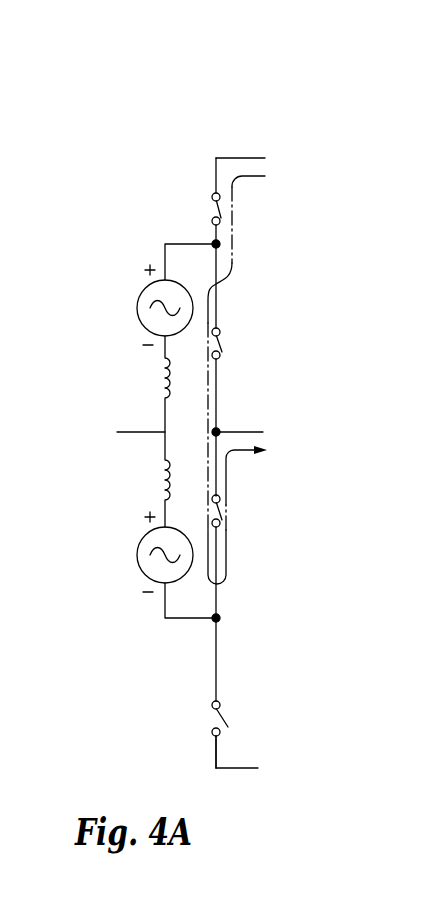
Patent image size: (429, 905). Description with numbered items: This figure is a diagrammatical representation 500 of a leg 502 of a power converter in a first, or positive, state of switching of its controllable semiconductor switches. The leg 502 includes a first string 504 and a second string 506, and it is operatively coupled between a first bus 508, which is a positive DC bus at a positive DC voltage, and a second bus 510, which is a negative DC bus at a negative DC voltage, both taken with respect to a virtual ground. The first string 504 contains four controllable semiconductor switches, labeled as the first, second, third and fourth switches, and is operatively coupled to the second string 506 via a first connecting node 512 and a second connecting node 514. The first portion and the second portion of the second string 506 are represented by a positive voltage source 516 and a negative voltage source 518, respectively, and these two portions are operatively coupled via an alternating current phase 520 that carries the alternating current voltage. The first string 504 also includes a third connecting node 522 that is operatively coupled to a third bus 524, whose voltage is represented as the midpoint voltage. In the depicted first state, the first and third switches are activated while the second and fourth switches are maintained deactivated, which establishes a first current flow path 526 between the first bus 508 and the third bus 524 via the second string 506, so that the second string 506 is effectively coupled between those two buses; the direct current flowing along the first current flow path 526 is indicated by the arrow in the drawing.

The power converter circuit 500 is at (148, 86).
The leg 502 is at (266, 128).
The first string 504 is at (215, 757).
The second string 506 is at (164, 244).
The first bus 508 is at (237, 158).
The second bus 510 is at (245, 768).
The first connecting node 512 is at (214, 243).
The second connecting node 514 is at (218, 616).
The voltage source Vp 516 is at (142, 291).
The voltage source Vn 518 is at (142, 538).
The alternating current phase 520 is at (132, 432).
The third connecting node 522 is at (217, 430).
The third bus 524 is at (243, 432).
The first current flow path 526 is at (233, 253).